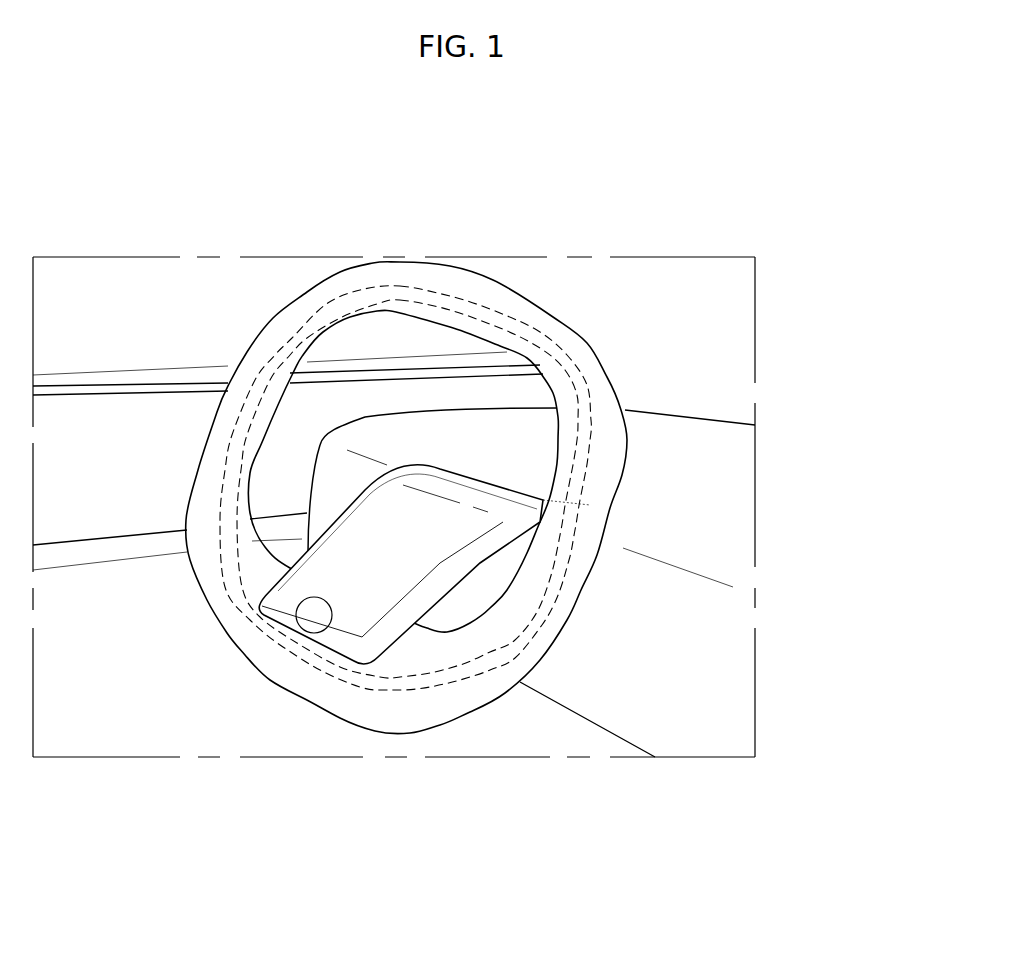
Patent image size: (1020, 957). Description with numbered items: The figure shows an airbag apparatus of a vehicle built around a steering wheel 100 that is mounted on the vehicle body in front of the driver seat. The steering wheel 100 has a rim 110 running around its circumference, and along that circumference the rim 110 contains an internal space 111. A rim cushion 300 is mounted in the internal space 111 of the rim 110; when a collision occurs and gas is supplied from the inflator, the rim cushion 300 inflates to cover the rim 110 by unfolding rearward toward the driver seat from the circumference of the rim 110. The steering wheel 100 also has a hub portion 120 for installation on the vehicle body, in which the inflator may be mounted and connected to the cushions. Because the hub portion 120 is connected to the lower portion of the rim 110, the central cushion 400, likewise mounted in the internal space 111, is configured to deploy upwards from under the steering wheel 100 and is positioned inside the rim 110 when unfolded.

The steering wheel 100 is at (508, 436).
The rim 110 is at (500, 283).
The internal space 111 is at (267, 356).
The hub portion 120 is at (585, 502).
The rim cushion 300 is at (400, 707).
The central cushion 400 is at (322, 634).